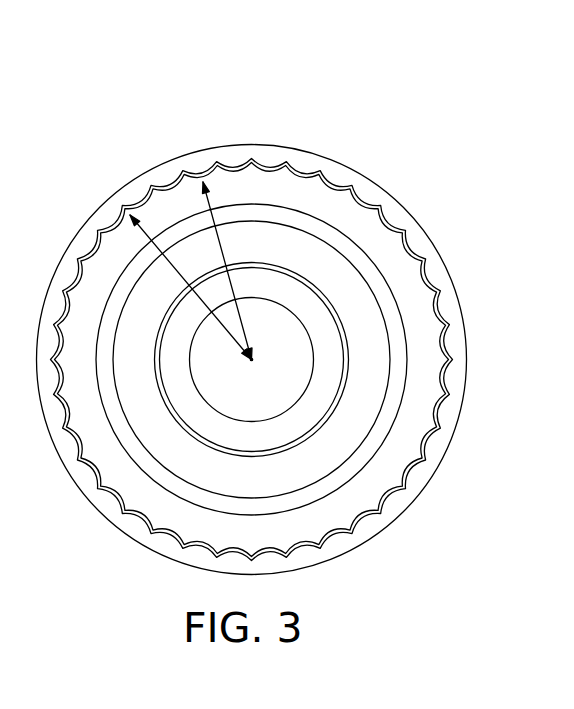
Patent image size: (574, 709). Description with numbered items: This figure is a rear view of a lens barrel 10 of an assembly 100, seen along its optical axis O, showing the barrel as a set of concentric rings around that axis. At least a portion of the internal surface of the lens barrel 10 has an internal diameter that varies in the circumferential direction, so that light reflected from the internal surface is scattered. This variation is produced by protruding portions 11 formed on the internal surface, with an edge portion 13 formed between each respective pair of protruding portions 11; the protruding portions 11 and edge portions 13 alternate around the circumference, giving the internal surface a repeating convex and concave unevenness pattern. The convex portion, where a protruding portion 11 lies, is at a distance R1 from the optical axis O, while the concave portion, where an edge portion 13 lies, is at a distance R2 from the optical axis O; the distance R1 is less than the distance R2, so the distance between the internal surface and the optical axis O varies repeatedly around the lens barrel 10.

The filter assembly 100 is at (275, 46).
The lens barrel 10 is at (443, 273).
The protruding portion 11 is at (333, 177).
The edge portion 13 is at (373, 195).
The optical axis O is at (257, 357).
The distance between convex portion and optical axis R1 is at (213, 202).
The distance between concave portion and optical axis R2 is at (145, 232).